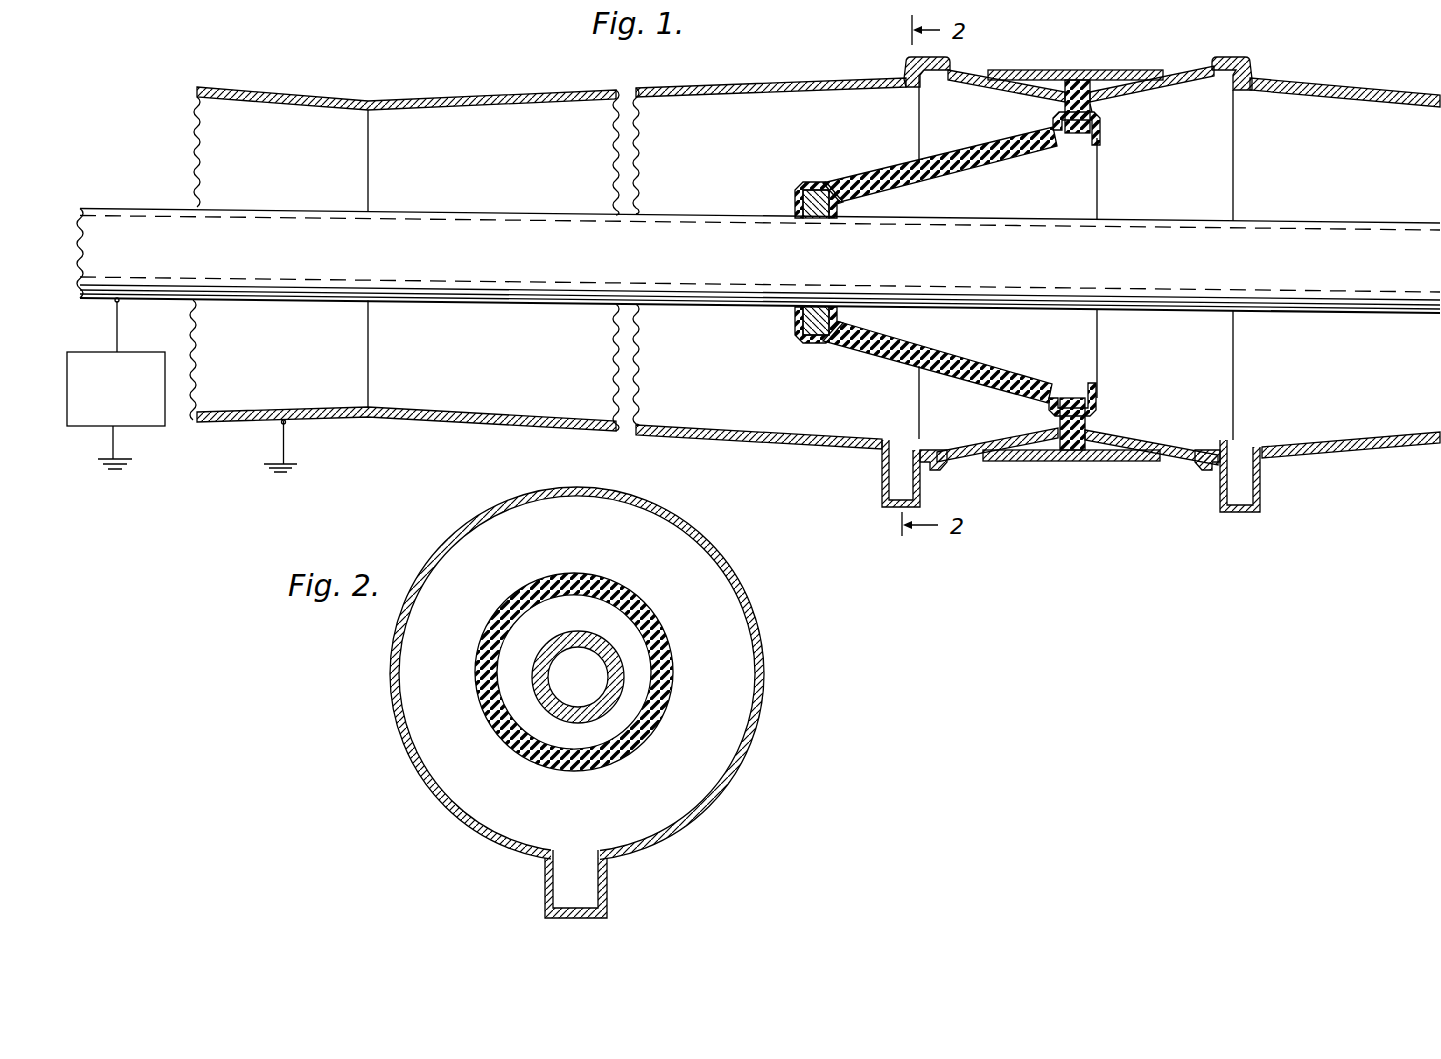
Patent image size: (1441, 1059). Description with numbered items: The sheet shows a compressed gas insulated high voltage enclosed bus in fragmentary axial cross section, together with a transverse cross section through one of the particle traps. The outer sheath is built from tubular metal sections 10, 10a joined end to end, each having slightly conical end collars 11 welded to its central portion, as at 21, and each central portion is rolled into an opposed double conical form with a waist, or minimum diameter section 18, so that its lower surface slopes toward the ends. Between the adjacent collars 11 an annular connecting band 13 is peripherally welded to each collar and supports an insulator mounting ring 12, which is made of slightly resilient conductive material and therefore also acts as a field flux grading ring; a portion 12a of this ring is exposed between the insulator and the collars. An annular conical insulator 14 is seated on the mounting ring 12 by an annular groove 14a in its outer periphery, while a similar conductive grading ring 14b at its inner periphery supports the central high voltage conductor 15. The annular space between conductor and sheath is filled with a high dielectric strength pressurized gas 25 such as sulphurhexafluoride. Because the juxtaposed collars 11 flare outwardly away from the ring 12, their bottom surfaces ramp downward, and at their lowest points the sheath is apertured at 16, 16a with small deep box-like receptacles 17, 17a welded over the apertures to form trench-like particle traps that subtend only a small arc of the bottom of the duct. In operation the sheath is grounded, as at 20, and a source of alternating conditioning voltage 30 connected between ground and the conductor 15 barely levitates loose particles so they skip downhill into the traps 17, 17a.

In FIG. 1, the sheath section 10 is at (744, 87).
In FIG. 2, the sheath section 10 is at (421, 786).
In FIG. 1, the sheath section 10a is at (1347, 93).
In FIG. 1, the conical end collar 11 is at (987, 80).
In FIG. 1, the insulator mounting ring 12 is at (1077, 86).
In FIG. 1, the exposed portion of mounting ring 12a is at (1092, 108).
In FIG. 1, the annular connecting band 13 is at (1103, 70).
In FIG. 1, the annular insulator 14 is at (888, 176).
In FIG. 2, the annular insulator 14 is at (678, 661).
In FIG. 1, the annular groove 14a is at (1086, 146).
In FIG. 1, the conductive grading ring 14b is at (815, 215).
In FIG. 1, the central high voltage conductor 15 is at (711, 227).
In FIG. 2, the central high voltage conductor 15 is at (583, 640).
In FIG. 1, the aperture 16 is at (902, 447).
In FIG. 2, the aperture 16 is at (575, 862).
In FIG. 1, the aperture 16a is at (1243, 450).
In FIG. 1, the particle trap receptacle 17 is at (882, 482).
In FIG. 2, the particle trap receptacle 17 is at (607, 885).
In FIG. 1, the particle trap receptacle 17a is at (1260, 487).
In FIG. 1, the waist section 18 is at (369, 101).
In FIG. 1, the ground connection 20 is at (266, 466).
In FIG. 1, the weld 21 is at (950, 64).
In FIG. 1, the pressurized gas 25 is at (524, 126).
In FIG. 1, the source of alternating conditioning voltage 30 is at (144, 352).